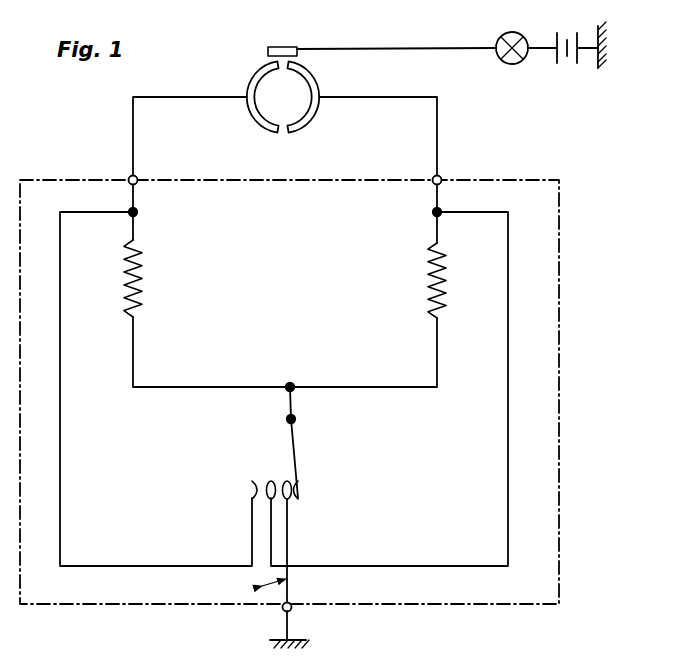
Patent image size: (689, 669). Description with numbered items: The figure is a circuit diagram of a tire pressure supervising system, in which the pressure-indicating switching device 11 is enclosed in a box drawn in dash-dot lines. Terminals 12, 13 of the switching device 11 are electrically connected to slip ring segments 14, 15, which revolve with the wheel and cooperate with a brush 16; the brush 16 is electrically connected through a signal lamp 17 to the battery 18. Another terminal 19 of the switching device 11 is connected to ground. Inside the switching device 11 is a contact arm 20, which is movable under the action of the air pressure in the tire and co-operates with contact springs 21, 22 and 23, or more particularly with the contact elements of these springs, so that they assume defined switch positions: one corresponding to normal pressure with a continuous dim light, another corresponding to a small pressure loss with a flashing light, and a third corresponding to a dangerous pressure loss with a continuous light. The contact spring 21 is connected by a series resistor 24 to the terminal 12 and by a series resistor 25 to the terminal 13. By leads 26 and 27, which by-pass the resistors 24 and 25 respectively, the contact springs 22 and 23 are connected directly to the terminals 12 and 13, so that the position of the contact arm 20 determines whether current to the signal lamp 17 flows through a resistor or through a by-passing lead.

The switching device 11 is at (578, 259).
The terminal 12 is at (440, 177).
The terminal 13 is at (136, 176).
The slip ring segment 14 is at (318, 87).
The slip ring segment 15 is at (250, 80).
The brush 16 is at (289, 47).
The signal lamp 17 is at (514, 60).
The battery 18 is at (569, 55).
The terminal 19 is at (292, 610).
The contact arm 20 is at (289, 539).
The contact spring 21 is at (297, 449).
The contact spring 22 is at (271, 556).
The contact spring 23 is at (252, 521).
The series resistor 24 is at (445, 288).
The series resistor 25 is at (140, 287).
The lead 26 is at (508, 431).
The lead 27 is at (62, 436).